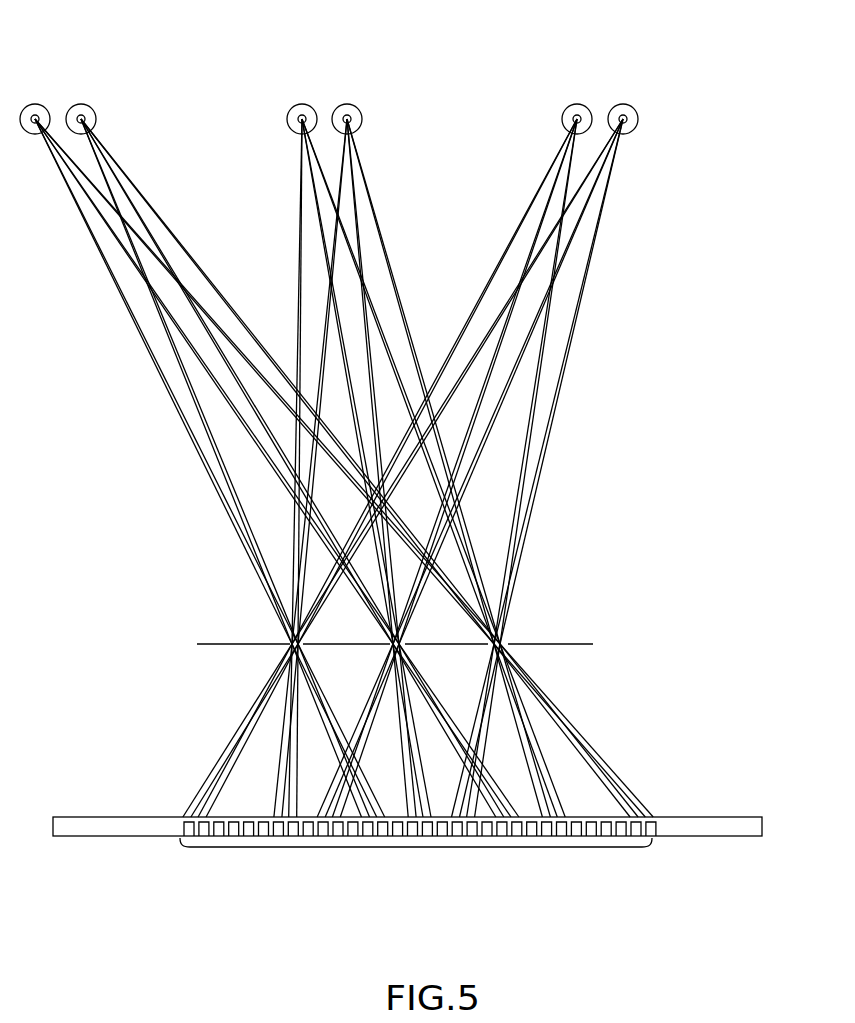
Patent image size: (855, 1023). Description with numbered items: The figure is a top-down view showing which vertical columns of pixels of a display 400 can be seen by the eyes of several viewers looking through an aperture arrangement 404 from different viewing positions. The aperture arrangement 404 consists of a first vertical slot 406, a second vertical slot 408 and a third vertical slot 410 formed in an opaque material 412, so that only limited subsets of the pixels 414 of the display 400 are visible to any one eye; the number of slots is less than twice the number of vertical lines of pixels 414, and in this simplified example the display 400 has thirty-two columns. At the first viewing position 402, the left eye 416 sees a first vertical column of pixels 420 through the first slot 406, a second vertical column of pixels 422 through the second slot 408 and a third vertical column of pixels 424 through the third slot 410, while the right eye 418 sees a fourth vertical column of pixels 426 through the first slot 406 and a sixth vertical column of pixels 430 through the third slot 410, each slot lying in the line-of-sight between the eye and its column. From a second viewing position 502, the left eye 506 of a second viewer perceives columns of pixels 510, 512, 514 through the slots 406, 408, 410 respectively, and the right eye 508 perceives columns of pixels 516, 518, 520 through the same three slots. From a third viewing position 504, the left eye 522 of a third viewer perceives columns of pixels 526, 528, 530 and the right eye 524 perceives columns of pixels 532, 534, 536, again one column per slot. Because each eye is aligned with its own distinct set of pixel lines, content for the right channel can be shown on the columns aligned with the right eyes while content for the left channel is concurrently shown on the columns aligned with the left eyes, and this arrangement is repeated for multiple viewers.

The display 400 is at (752, 817).
The viewing position 402 is at (86, 79).
The aperture arrangement 404 is at (419, 626).
The first vertical slot 406 is at (266, 626).
The second vertical slot 408 is at (376, 634).
The third vertical slot 410 is at (476, 636).
The opaque material 412 is at (232, 642).
The pixels 414 is at (411, 846).
The left eye 416 is at (91, 106).
The right eye 418 is at (30, 104).
The first vertical column of pixels 420 is at (375, 846).
The second vertical column of pixels 422 is at (500, 846).
The third vertical column of pixels 424 is at (635, 846).
The fourth vertical column of pixels 426 is at (387, 846).
The sixth vertical column of pixels 430 is at (650, 846).
The second viewing position 502 is at (352, 79).
The third viewing position 504 is at (629, 79).
The left eye of second viewer 506 is at (357, 106).
The right eye of second viewer 508 is at (294, 103).
The vertical column of pixels 510 is at (272, 846).
The vertical column of pixels 512 is at (420, 846).
The vertical column of pixels 514 is at (546, 846).
The vertical column of pixels 516 is at (298, 846).
The vertical column of pixels 518 is at (432, 846).
The vertical column of pixels 520 is at (559, 846).
The left eye of third viewer 522 is at (633, 106).
The right eye of third viewer 524 is at (569, 103).
The vertical column of pixels 526 is at (182, 817).
The vertical column of pixels 528 is at (320, 846).
The vertical column of pixels 530 is at (455, 846).
The vertical column of pixels 532 is at (206, 818).
The vertical column of pixels 534 is at (335, 846).
The vertical column of pixels 536 is at (468, 846).